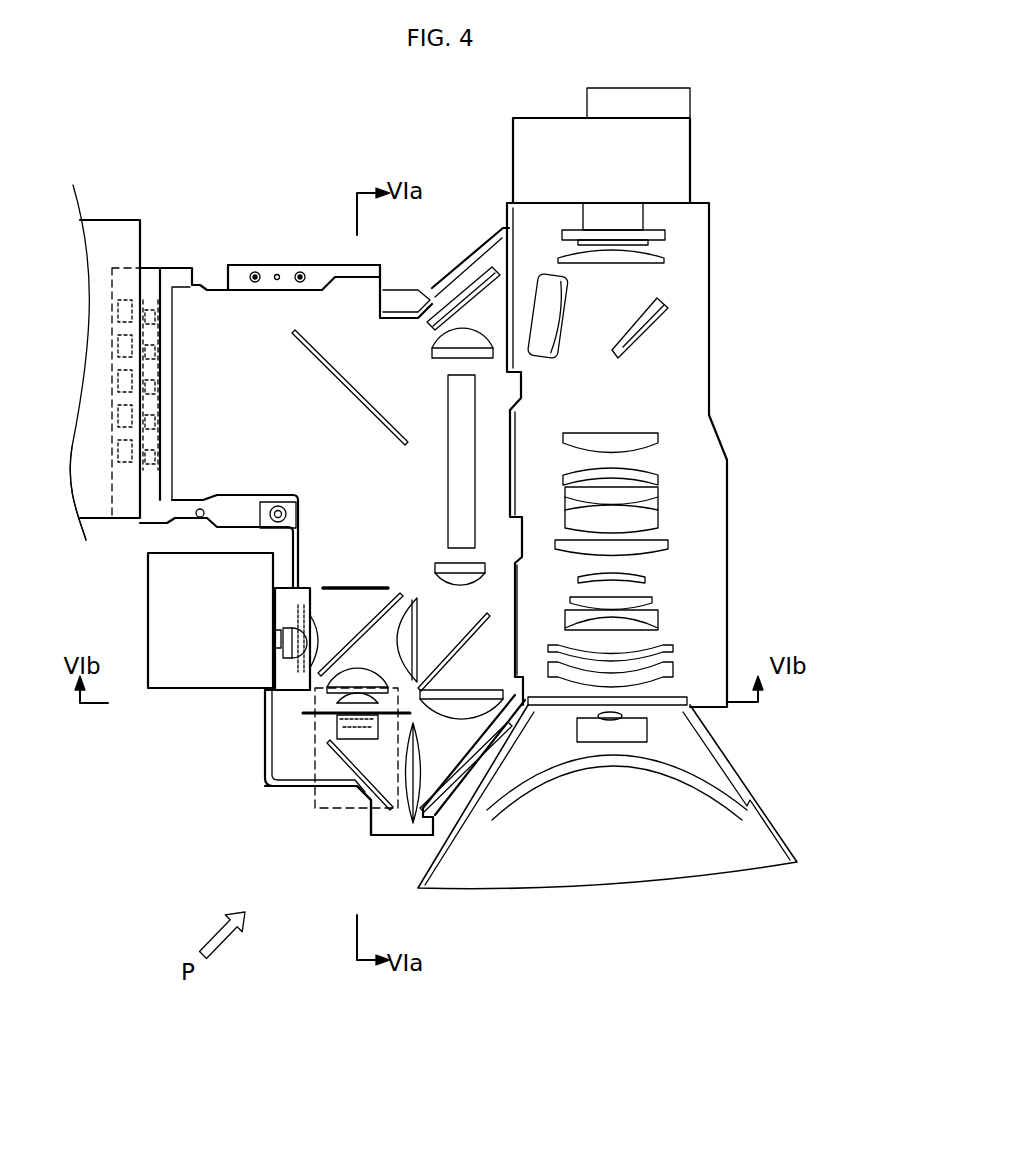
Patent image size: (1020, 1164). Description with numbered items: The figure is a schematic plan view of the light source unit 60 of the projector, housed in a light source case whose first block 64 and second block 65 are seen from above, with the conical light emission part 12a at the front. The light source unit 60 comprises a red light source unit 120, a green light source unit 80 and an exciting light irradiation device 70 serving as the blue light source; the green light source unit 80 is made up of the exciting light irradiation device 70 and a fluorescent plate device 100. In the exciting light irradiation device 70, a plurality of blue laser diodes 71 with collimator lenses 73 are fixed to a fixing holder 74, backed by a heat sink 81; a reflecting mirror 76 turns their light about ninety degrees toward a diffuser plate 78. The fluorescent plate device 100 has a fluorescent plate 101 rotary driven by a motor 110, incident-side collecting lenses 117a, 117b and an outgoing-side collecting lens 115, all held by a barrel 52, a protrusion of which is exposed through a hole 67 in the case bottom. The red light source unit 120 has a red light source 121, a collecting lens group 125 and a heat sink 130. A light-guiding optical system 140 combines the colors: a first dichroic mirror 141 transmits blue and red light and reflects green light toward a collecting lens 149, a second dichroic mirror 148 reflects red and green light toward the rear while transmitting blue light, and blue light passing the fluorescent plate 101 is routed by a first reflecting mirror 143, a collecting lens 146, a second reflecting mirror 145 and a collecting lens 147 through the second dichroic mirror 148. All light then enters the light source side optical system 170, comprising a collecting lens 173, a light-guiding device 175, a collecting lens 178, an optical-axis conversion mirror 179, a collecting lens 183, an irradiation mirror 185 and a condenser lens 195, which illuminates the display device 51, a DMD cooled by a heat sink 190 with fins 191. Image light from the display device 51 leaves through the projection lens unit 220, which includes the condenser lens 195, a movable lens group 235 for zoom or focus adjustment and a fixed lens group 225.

The light emission part 12a is at (590, 860).
The display device 51 is at (655, 240).
The barrel 52 is at (355, 792).
The light source unit 60 is at (272, 357).
The first block 64 is at (320, 258).
The second block 65 is at (656, 397).
The hole 67 is at (338, 707).
The exciting light irradiation device 70 is at (113, 257).
The blue laser diodes 71 is at (136, 470).
The collimator lens 73 is at (160, 460).
The fixing holder 74 is at (113, 503).
The reflecting mirror 76 is at (308, 352).
The diffuser plate 78 is at (338, 588).
The green light source unit 80 is at (108, 333).
The heat sink 81 is at (93, 512).
The fluorescent plate device 100 is at (310, 733).
The fluorescent plate 101 is at (340, 716).
The motor 110 is at (313, 738).
The collecting lens 115 is at (306, 783).
The collecting lens 117a is at (362, 667).
The collecting lens 117b is at (372, 700).
The red light source unit 120 is at (201, 645).
The red light source 121 is at (275, 638).
The collecting lens group 125 is at (283, 607).
The heat sink 130 is at (172, 628).
The light-guiding optical system 140 is at (418, 573).
The first dichroic mirror 141 is at (353, 645).
The first reflecting mirror 143 is at (362, 775).
The second reflecting mirror 145 is at (455, 775).
The collecting lens 146 is at (412, 826).
The collecting lens 147 is at (460, 690).
The second dichroic mirror 148 is at (500, 615).
The collecting lens 149 is at (420, 637).
The light source side optical system 170 is at (432, 259).
The collecting lens 173 is at (440, 565).
The light-guiding device 175 is at (448, 490).
The collecting lens 178 is at (440, 360).
The optical-axis conversion mirror 179 is at (430, 325).
The collecting lens 183 is at (548, 360).
The irradiation mirror 185 is at (660, 323).
The heat sink 190 is at (680, 140).
The fins 191 is at (680, 170).
The condenser lens 195 is at (658, 262).
The projection lens unit 220 is at (682, 540).
The fixed lens group 225 is at (672, 625).
The movable lens group 235 is at (650, 462).